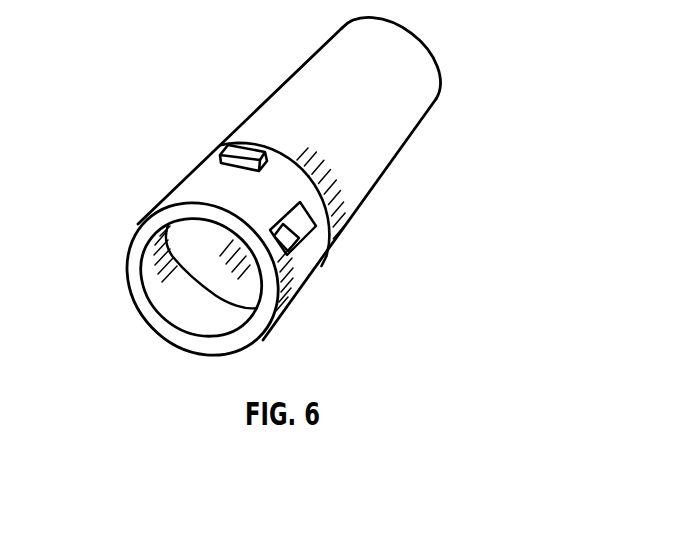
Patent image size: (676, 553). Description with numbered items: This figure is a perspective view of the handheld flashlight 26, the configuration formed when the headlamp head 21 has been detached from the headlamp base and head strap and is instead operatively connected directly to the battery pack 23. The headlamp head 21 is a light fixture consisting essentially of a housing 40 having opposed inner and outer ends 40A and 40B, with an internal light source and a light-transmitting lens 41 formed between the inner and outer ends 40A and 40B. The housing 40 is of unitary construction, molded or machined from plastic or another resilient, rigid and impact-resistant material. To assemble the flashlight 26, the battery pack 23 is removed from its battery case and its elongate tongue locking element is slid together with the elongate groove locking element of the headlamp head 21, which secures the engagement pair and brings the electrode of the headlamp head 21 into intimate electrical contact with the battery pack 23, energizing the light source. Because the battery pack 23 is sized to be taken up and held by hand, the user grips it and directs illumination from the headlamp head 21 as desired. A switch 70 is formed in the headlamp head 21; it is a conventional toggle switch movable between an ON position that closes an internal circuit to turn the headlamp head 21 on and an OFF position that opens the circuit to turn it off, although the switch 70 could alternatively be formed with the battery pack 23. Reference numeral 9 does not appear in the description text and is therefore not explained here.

The tubular body 9 is at (427, 76).
The headlamp head 21 is at (125, 281).
The battery pack 23 is at (410, 134).
The handheld flashlight 26 is at (181, 44).
The housing 40 is at (203, 190).
The inner end 40A is at (330, 257).
The outer end 40B is at (258, 333).
The light-transmitting lens 41 is at (200, 258).
The switch 70 is at (288, 238).